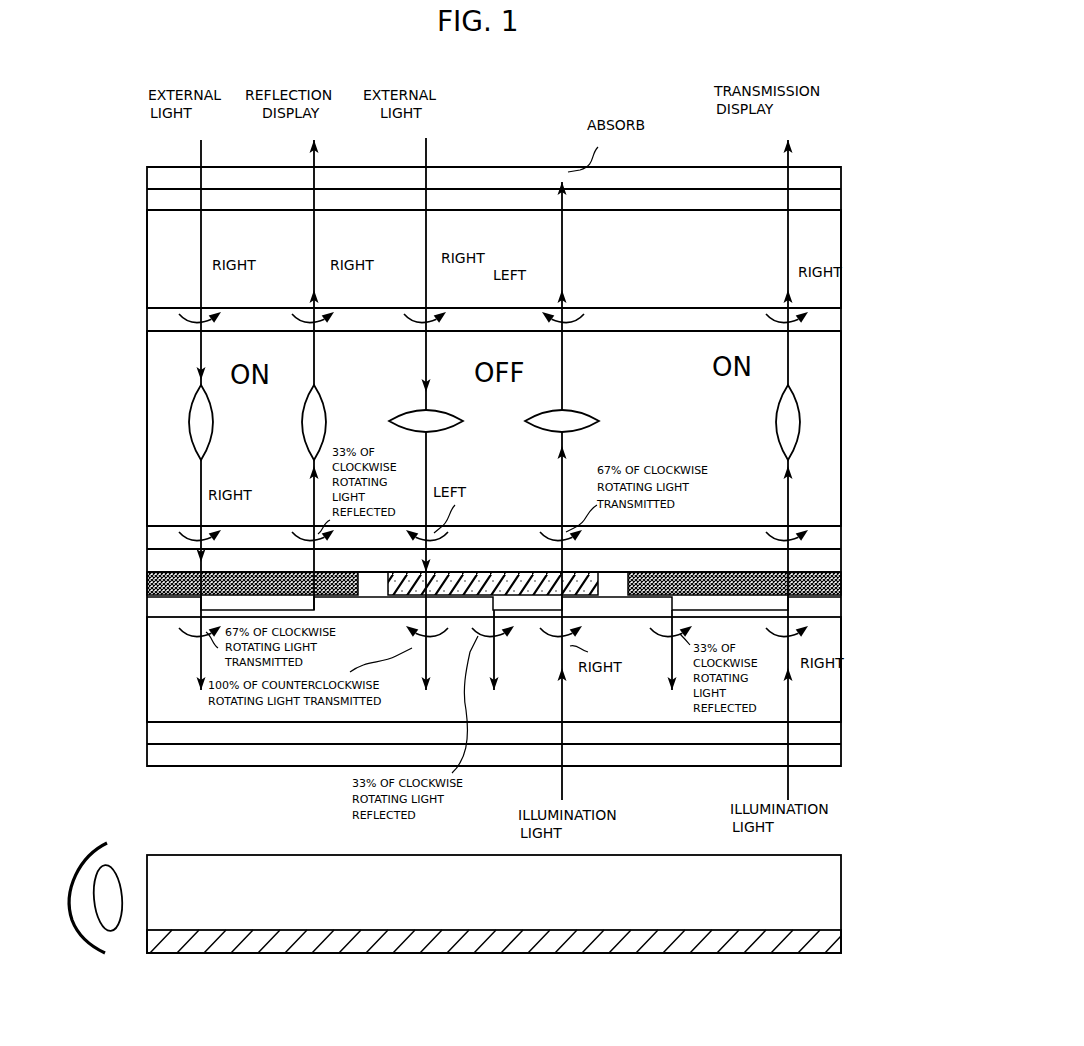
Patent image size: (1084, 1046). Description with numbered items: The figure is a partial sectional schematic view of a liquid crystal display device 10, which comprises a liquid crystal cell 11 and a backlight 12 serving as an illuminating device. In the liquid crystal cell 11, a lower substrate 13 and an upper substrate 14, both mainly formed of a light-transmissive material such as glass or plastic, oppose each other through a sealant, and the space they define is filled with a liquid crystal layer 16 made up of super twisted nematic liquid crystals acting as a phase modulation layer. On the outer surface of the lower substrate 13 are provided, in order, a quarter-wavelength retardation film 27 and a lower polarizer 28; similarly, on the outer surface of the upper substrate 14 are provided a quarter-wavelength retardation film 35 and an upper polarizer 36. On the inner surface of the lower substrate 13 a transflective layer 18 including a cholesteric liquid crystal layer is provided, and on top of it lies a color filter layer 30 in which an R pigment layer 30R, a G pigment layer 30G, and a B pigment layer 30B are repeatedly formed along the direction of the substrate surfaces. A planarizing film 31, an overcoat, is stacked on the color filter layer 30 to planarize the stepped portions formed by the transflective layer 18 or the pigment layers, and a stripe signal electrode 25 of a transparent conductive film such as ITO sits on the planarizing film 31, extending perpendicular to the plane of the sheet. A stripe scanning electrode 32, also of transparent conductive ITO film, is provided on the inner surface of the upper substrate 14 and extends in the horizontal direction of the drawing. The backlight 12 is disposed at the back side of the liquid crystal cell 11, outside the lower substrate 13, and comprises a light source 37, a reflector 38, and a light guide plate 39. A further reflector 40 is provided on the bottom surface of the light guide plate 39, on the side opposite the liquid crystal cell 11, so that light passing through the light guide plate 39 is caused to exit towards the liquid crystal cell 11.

The liquid crystal display device 10 is at (480, 160).
The liquid crystal cell 11 is at (131, 220).
The backlight 12 is at (101, 873).
The lower substrate 13 is at (828, 698).
The upper substrate 14 is at (828, 240).
The liquid crystal layer 16 is at (828, 379).
The transflective layer 18 is at (848, 622).
The stripe signal electrode 25 is at (836, 534).
The retardation film 27 is at (832, 732).
The lower polarizer 28 is at (834, 754).
The color filter layer 30 is at (489, 525).
The R pigment layer 30R is at (167, 572).
The G pigment layer 30G is at (498, 576).
The B pigment layer 30B is at (810, 572).
The planarizing film 31 is at (834, 556).
The stripe scanning electrode 32 is at (834, 320).
The retardation film 35 is at (834, 196).
The upper polarizer 36 is at (841, 172).
The light source 37 is at (113, 918).
The reflector 38 is at (69, 924).
The light guide plate 39 is at (828, 886).
The reflector 40 is at (838, 940).